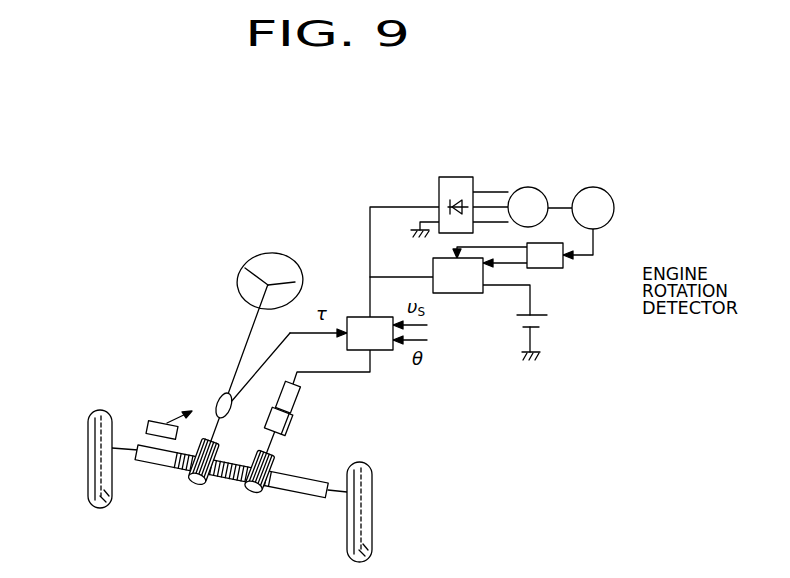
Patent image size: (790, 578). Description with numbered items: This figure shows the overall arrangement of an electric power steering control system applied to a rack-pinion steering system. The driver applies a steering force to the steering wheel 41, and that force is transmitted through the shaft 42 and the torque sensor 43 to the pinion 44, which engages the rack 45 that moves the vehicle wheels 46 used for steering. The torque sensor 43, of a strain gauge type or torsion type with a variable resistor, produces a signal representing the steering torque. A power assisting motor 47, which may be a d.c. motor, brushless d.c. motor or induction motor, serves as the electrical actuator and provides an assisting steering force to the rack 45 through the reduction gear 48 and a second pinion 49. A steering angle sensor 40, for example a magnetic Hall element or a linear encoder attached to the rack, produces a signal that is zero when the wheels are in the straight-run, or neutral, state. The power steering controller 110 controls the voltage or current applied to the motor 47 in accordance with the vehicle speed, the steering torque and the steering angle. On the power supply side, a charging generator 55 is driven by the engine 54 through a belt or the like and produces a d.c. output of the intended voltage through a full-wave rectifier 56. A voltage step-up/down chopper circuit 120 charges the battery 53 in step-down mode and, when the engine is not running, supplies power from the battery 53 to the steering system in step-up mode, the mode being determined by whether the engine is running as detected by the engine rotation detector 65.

The steering angle sensor 40 is at (150, 422).
The steering wheel 41 is at (242, 265).
The shaft 42 is at (242, 345).
The torque sensor 43 is at (213, 402).
The pinion 44 is at (199, 484).
The rack 45 is at (178, 468).
The wheels 46 is at (86, 458).
The power assisting motor 47 is at (298, 398).
The reduction gear 48 is at (290, 425).
The pinion 49 is at (253, 493).
The battery 53 is at (548, 323).
The engine 54 is at (593, 186).
The charging generator 55 is at (532, 186).
The full-wave rectifier 56 is at (455, 177).
The engine rotation detector 65 is at (565, 268).
The power steering controller 110 is at (380, 351).
The voltage step-up/down chopper circuit 120 is at (470, 294).